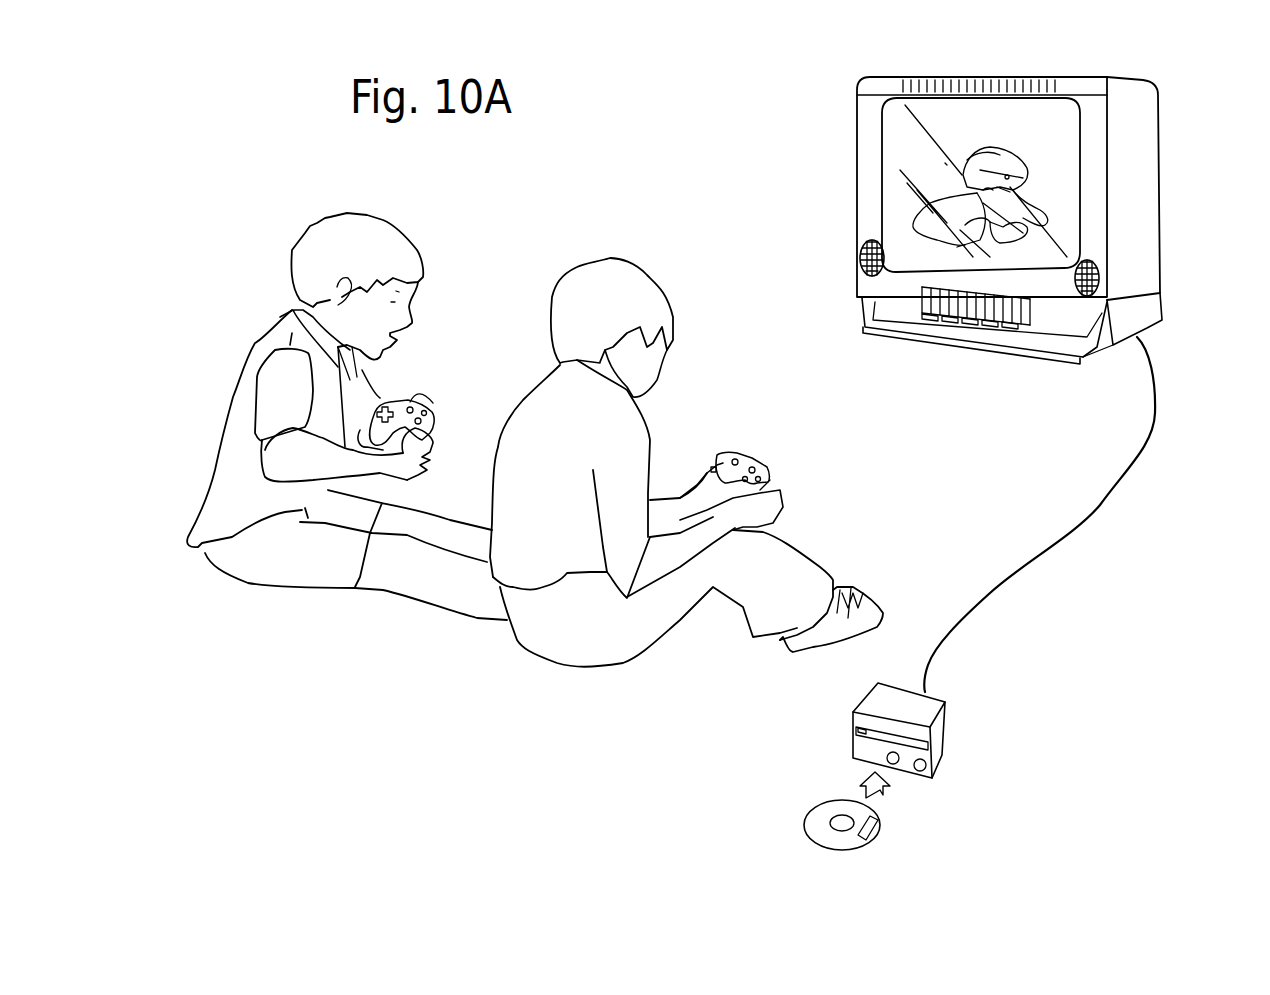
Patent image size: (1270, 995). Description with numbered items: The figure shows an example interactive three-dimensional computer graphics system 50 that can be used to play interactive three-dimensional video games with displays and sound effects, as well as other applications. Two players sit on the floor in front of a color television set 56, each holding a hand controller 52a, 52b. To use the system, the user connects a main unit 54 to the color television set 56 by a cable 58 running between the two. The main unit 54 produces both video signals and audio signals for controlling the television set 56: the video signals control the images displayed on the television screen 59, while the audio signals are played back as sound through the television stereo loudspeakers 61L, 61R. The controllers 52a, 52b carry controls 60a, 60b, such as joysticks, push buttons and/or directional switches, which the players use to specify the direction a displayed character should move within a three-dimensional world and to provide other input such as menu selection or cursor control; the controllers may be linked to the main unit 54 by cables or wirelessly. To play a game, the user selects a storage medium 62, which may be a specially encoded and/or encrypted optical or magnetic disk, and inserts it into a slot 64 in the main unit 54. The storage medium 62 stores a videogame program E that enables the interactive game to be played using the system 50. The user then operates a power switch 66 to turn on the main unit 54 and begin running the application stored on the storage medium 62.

The interactive 3D computer graphics system 50 is at (1103, 708).
The hand controller 52a is at (433, 403).
The hand controller 52b is at (770, 480).
The main unit 54 is at (940, 730).
The color television set 56 is at (1073, 83).
The cable 58 is at (1022, 567).
The television screen 59 is at (973, 125).
The controls 60a is at (410, 402).
The controls 60b is at (738, 455).
The television stereo loudspeaker 61L is at (863, 258).
The television stereo loudspeaker 61R is at (1098, 293).
The storage medium 62 is at (828, 832).
The slot 64 is at (856, 728).
The power switch 66 is at (922, 772).
The videogame program E is at (874, 830).